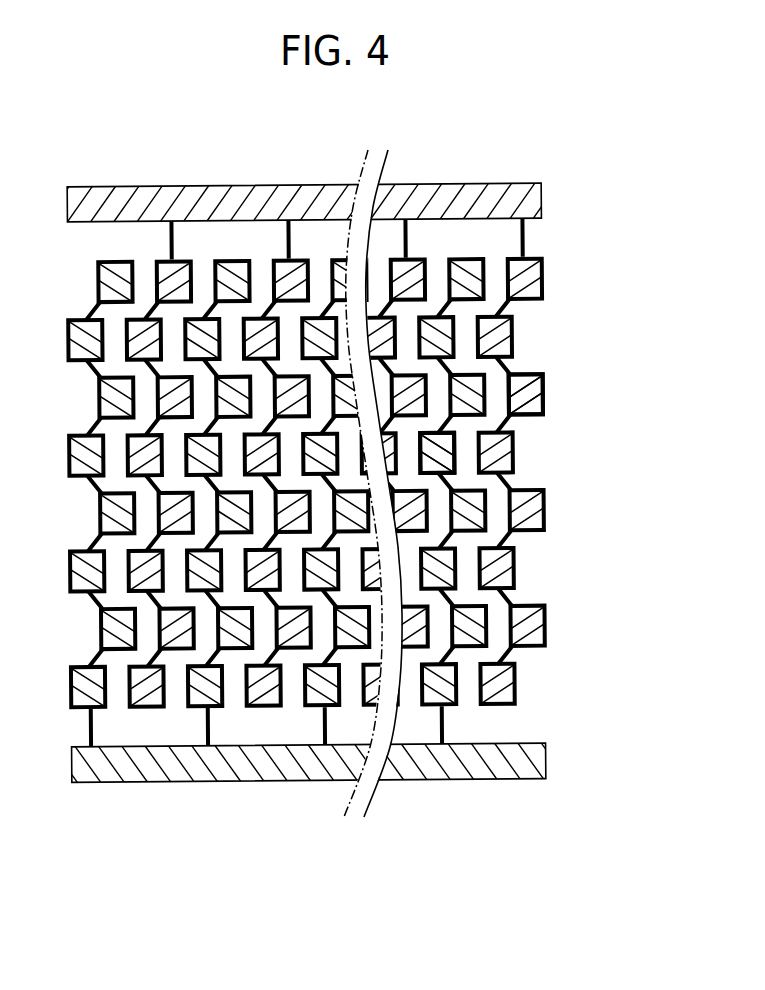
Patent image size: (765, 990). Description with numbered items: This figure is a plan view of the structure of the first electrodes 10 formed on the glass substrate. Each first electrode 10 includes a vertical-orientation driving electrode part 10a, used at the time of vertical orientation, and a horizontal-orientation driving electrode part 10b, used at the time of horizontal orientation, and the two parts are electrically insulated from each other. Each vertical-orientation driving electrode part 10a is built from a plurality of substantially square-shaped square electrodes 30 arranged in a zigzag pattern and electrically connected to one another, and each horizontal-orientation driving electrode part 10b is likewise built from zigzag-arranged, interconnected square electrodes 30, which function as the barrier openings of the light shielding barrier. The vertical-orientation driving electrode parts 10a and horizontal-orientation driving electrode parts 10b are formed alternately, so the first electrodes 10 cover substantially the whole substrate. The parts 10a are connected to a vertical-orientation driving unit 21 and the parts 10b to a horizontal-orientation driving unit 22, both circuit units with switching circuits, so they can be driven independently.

The first electrode 10 is at (652, 380).
The vertical-orientation driving electrode part 10a is at (546, 396).
The horizontal-orientation driving electrode part 10b is at (460, 450).
The vertical-orientation driving unit 21 is at (489, 200).
The horizontal-orientation driving unit 22 is at (500, 760).
The square electrode 30 is at (488, 280).